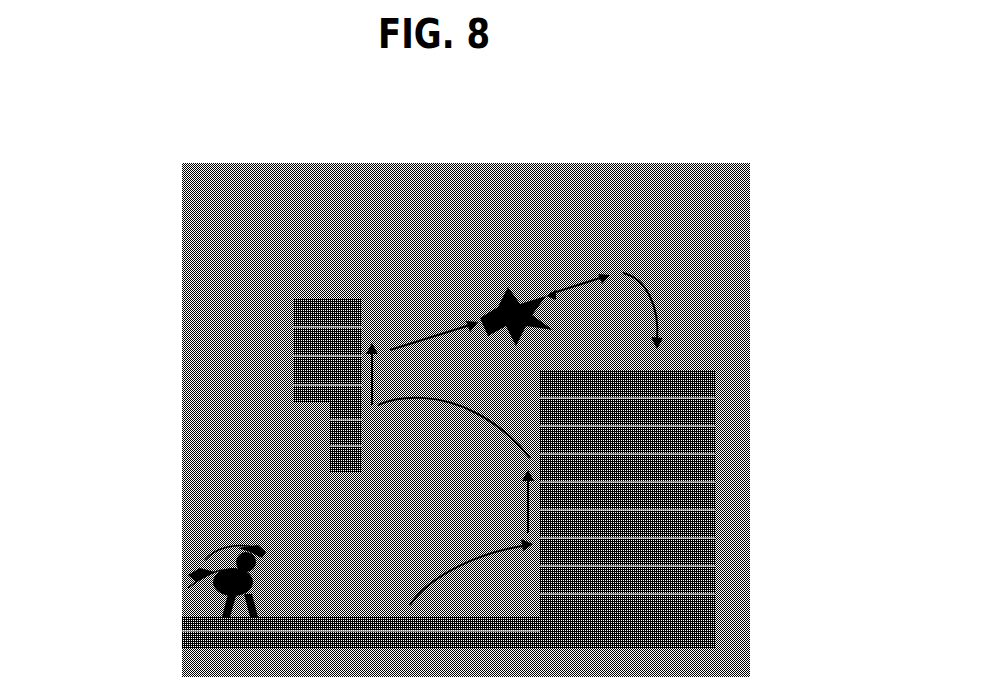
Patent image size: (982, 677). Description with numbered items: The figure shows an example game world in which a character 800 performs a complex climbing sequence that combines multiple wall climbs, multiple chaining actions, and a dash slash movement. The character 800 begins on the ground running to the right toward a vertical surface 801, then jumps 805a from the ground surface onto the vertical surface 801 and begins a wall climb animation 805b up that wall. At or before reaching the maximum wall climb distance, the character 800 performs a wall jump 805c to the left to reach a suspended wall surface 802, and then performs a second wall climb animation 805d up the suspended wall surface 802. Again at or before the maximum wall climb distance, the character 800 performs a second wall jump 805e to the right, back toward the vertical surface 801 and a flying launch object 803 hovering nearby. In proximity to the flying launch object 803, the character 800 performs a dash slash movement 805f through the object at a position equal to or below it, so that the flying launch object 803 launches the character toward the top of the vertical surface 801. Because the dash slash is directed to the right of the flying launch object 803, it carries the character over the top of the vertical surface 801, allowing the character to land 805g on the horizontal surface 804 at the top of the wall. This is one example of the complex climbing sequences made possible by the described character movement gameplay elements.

The character 800 is at (233, 578).
The vertical surface 801 is at (553, 460).
The suspended wall surface 802 is at (353, 373).
The flying launch object 803 is at (515, 317).
The horizontal surface 804 is at (677, 370).
The jump 805a is at (471, 572).
The wall climb animation 805b is at (507, 501).
The wall jump 805c is at (454, 428).
The second wall climb animation 805d is at (392, 374).
The second wall jump 805e is at (434, 332).
The dash slash movement 805f is at (578, 294).
The land 805g is at (633, 311).